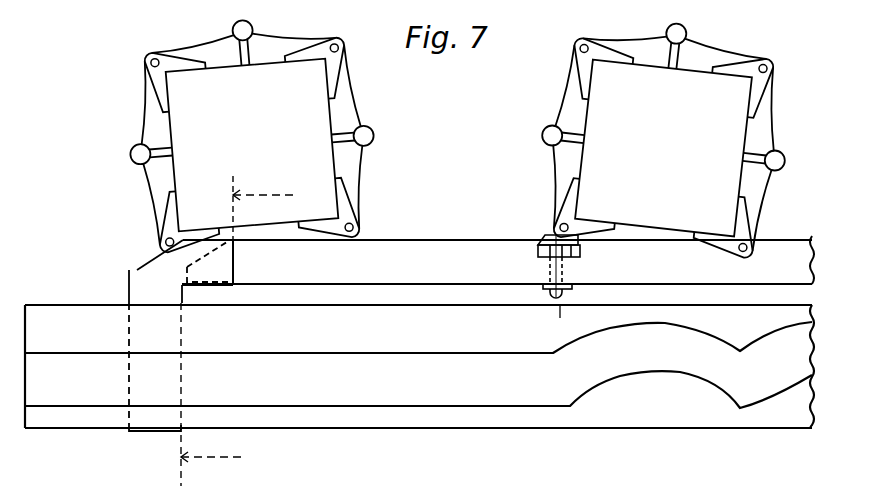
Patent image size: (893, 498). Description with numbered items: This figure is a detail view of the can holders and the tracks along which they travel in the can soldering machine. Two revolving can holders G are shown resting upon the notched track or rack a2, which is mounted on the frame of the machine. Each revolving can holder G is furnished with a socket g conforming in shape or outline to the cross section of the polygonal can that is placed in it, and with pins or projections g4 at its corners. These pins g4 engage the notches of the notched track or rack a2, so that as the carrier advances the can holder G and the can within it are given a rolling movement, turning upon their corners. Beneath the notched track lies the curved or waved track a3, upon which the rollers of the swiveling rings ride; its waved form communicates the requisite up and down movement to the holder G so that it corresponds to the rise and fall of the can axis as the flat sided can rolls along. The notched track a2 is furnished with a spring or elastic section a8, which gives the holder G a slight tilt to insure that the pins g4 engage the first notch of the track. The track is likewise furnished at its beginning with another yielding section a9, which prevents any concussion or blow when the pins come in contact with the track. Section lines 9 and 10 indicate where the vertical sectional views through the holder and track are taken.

The revolving can holder G is at (348, 174).
The socket g is at (333, 185).
The pins or projections g4 is at (354, 227).
The notched track or rack a2 is at (498, 260).
The curved or waved track a3 is at (419, 366).
The spring or elastic section a8 is at (548, 244).
The yielding section a9 is at (181, 335).
The section line 9— 9 is at (235, 328).
The section line 10— 10 is at (552, 208).